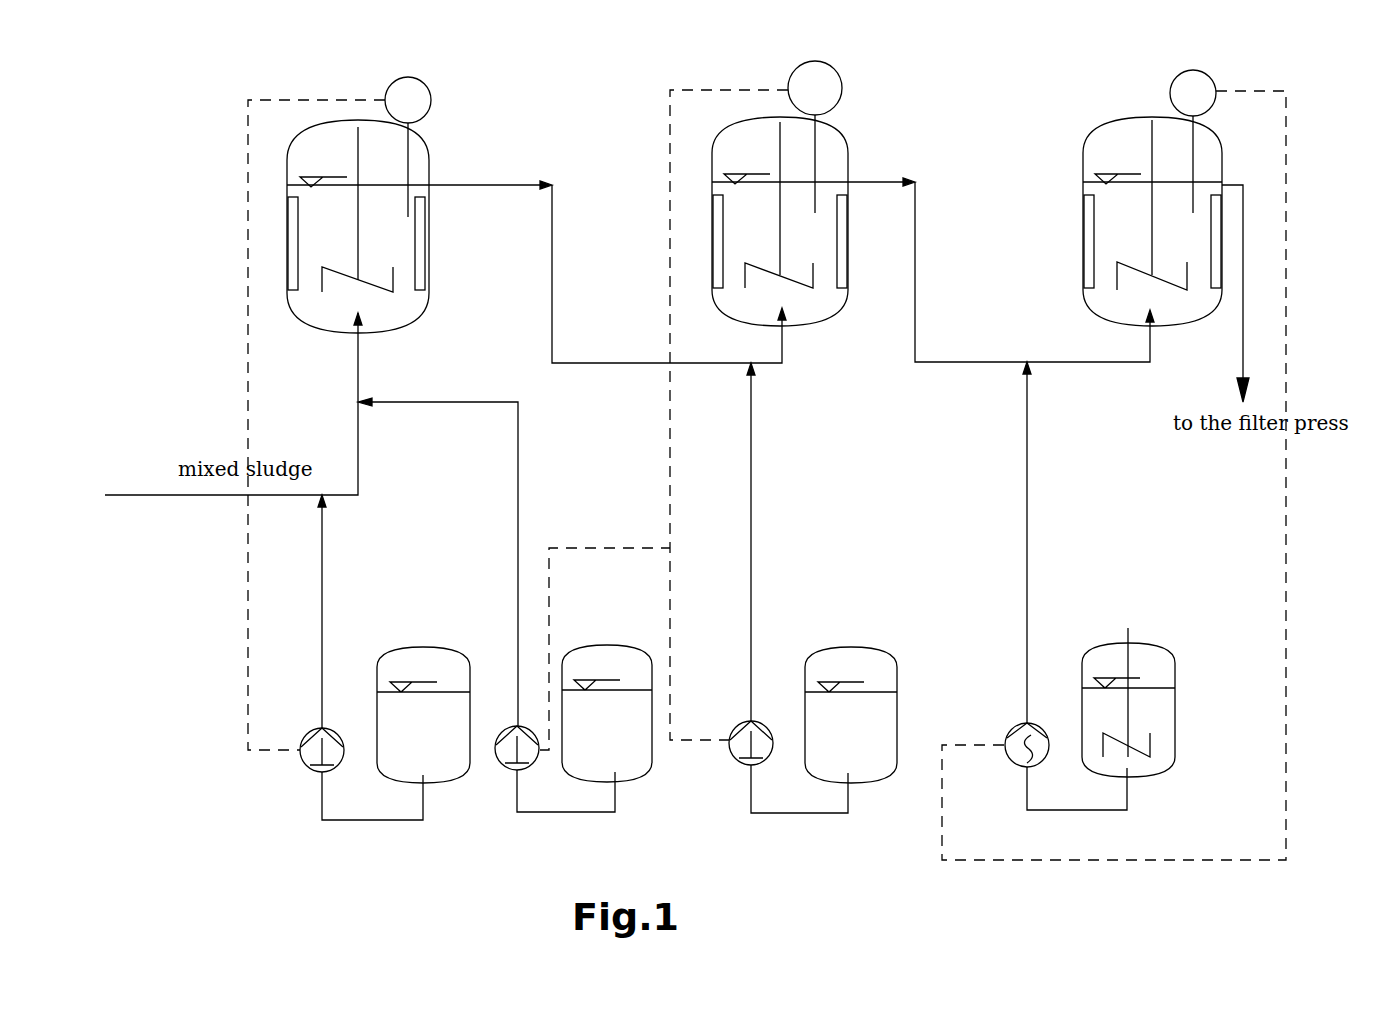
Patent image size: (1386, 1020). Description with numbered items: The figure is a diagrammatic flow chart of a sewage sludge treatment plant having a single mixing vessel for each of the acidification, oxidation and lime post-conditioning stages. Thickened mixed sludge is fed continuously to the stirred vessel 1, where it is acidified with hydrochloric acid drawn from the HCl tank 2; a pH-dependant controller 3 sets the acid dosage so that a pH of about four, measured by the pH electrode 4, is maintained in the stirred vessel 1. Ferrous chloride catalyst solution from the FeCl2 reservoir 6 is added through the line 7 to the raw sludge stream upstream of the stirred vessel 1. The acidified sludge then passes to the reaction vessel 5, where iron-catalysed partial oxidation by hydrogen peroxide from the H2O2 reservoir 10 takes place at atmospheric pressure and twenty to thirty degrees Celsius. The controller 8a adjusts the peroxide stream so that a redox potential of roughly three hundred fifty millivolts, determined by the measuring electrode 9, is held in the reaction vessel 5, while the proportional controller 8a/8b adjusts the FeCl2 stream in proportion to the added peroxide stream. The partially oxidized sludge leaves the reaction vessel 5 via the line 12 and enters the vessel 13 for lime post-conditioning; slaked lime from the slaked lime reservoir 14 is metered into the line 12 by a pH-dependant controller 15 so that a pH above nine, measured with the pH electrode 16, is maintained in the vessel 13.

The stirred vessel 1 is at (287, 195).
The HCl tank 2 is at (432, 777).
The pH-dependant controller 3 is at (248, 383).
The pH electrode 4 is at (431, 98).
The reaction vessel 5 is at (712, 192).
The FeCl2 reservoir 6 is at (637, 768).
The line 7 is at (518, 402).
The controller 8a is at (668, 485).
The proportional controller 8b is at (595, 545).
The measuring electrode 9 is at (840, 100).
The H2O2 reservoir 10 is at (870, 775).
The line 12 is at (987, 362).
The vessel 13 is at (1083, 195).
The slaked lime reservoir 14 is at (1163, 767).
The pH-dependant controller 15 is at (1286, 512).
The pH electrode 16 is at (1214, 82).